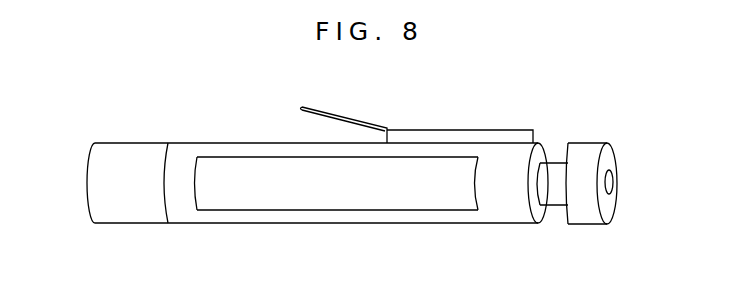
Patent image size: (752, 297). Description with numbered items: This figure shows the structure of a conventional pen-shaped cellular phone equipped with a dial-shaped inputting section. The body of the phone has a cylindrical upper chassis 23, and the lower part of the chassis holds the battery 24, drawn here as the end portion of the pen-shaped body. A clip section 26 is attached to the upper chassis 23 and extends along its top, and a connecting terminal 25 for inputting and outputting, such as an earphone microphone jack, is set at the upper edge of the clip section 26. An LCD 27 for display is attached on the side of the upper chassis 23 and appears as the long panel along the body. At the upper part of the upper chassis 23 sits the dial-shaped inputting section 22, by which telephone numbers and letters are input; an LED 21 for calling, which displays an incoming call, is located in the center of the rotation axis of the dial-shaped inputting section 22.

The LED 21 is at (613, 181).
The dial-shaped inputting section 22 is at (588, 142).
The upper chassis 23 is at (468, 223).
The battery of the lower part of chassis 24 is at (132, 215).
The connecting terminal 25 is at (535, 142).
The clip section 26 is at (358, 117).
The LCD 27 is at (340, 195).